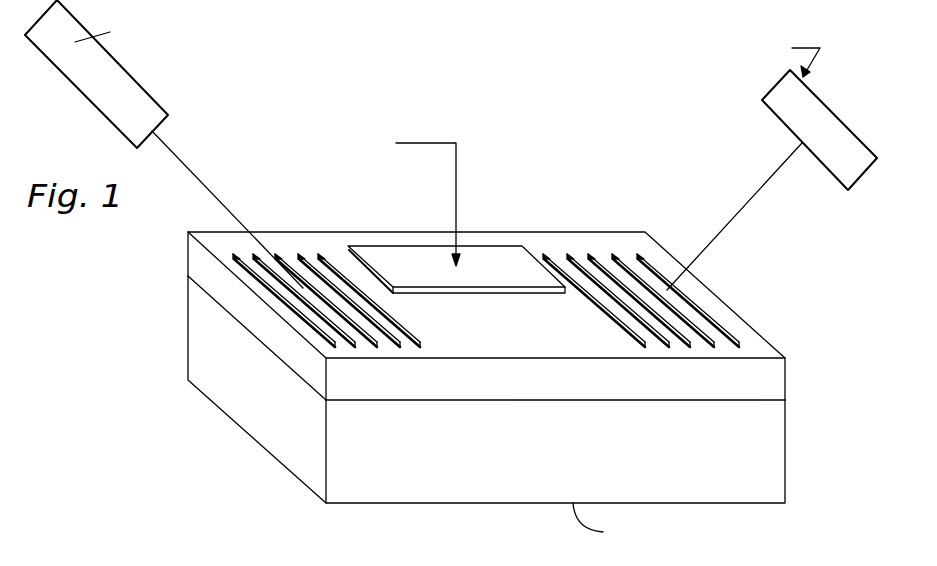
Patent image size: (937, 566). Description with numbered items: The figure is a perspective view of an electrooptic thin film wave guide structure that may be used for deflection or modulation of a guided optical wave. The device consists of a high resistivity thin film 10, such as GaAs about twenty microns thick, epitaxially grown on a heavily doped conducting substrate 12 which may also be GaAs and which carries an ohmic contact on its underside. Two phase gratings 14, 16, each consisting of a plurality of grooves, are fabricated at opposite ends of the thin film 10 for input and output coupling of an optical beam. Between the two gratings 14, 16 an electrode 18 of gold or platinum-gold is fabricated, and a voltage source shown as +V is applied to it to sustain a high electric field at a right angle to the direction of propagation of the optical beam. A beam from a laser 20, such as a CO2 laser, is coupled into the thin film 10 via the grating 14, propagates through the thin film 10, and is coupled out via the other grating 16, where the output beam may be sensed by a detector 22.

The thin film 10 is at (773, 383).
The substrate 12 is at (777, 458).
The phase grating 14 is at (302, 255).
The phase grating 16 is at (577, 255).
The electrode 18 is at (473, 248).
The laser 20 is at (122, 80).
The detector 22 is at (797, 127).